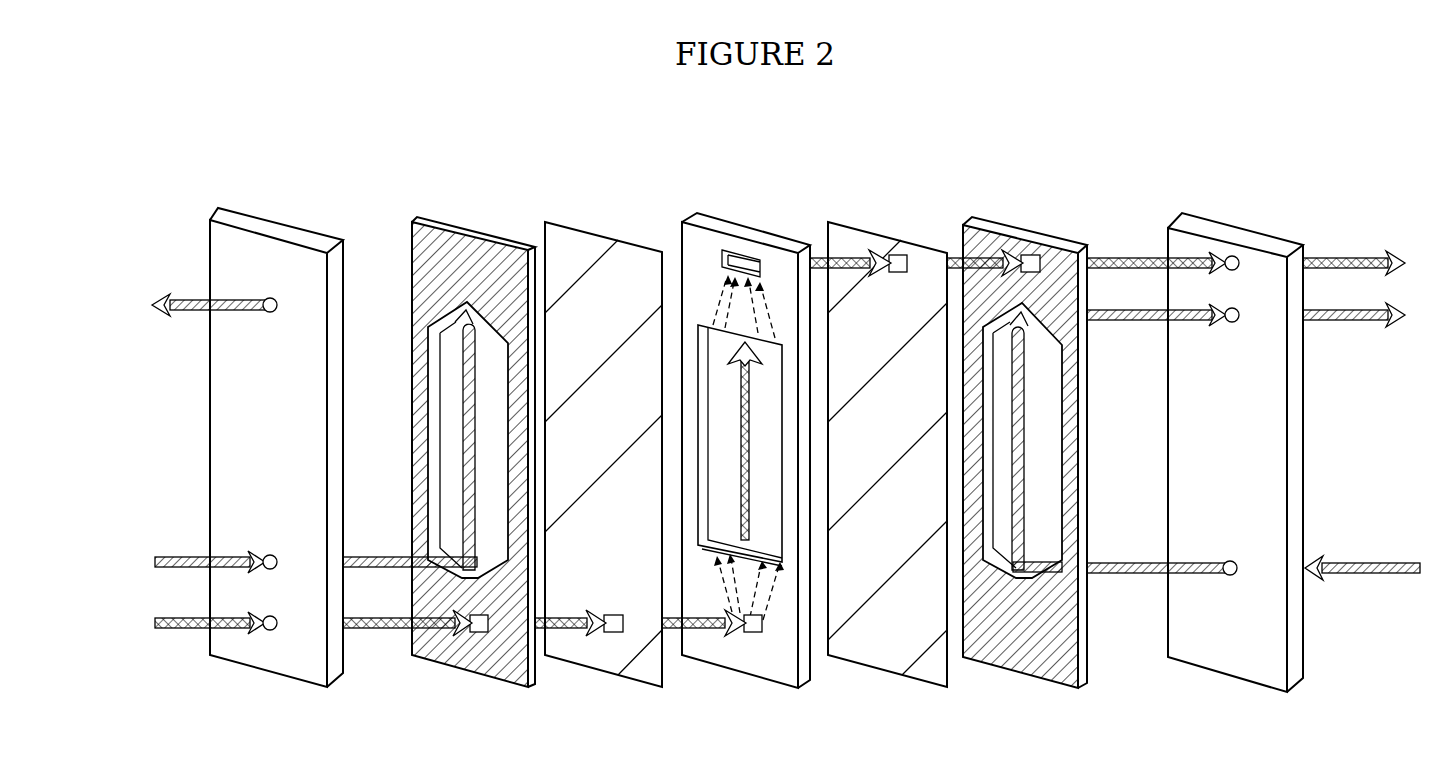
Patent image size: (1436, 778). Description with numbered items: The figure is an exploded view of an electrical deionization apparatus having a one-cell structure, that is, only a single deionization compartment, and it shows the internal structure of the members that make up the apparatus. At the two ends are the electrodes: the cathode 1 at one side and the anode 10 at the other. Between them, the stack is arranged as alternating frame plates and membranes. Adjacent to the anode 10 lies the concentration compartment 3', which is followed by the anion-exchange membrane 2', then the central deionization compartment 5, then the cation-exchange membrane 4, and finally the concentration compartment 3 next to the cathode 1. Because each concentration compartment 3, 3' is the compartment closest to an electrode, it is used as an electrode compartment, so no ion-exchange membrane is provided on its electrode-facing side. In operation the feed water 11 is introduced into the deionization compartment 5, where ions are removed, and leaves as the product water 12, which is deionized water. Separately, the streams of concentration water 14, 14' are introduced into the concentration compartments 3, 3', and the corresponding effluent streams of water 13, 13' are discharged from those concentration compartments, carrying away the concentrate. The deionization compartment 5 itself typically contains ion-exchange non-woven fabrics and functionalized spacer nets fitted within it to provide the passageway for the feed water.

The cathode 1 is at (1240, 228).
The anion-exchange membrane 2' is at (603, 477).
The concentration compartment 3 is at (1025, 477).
The concentration compartment 3' is at (473, 483).
The cation-exchange membrane 4 is at (868, 670).
The deionization compartment 5 is at (743, 680).
The anode 10 is at (283, 222).
The feed water 11 is at (180, 632).
The product water 12 is at (1348, 258).
The effluent stream of water 13 is at (1246, 342).
The effluent stream of water 13' is at (214, 280).
The stream of concentration water 14 is at (1219, 543).
The stream of concentration water 14' is at (299, 545).